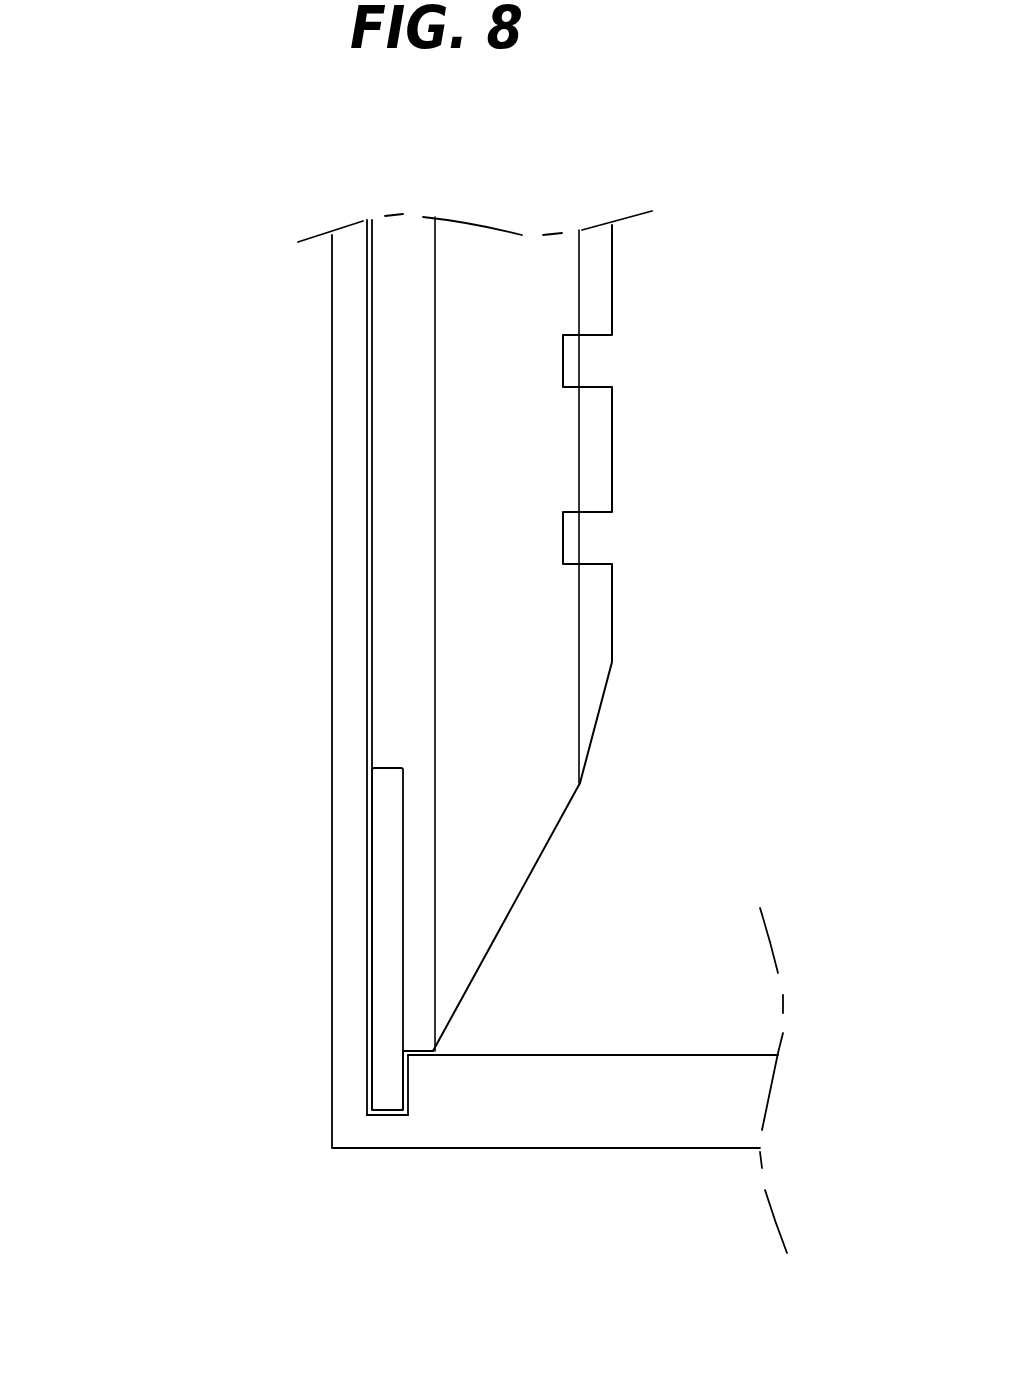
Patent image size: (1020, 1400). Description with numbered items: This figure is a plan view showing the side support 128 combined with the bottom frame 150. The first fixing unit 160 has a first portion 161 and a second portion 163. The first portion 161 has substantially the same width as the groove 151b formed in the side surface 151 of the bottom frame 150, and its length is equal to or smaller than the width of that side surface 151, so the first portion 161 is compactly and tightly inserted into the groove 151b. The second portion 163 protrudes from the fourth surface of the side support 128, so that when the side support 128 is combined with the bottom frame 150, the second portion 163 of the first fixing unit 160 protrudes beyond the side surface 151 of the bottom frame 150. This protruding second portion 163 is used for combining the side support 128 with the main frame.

The side support 128 is at (497, 258).
The side surface 151 is at (345, 450).
The groove 151b is at (386, 1115).
The bottom frame 150 is at (622, 1158).
The first fixing unit 160 is at (245, 686).
The first portion 161 is at (378, 1078).
The second portion 163 is at (377, 1040).